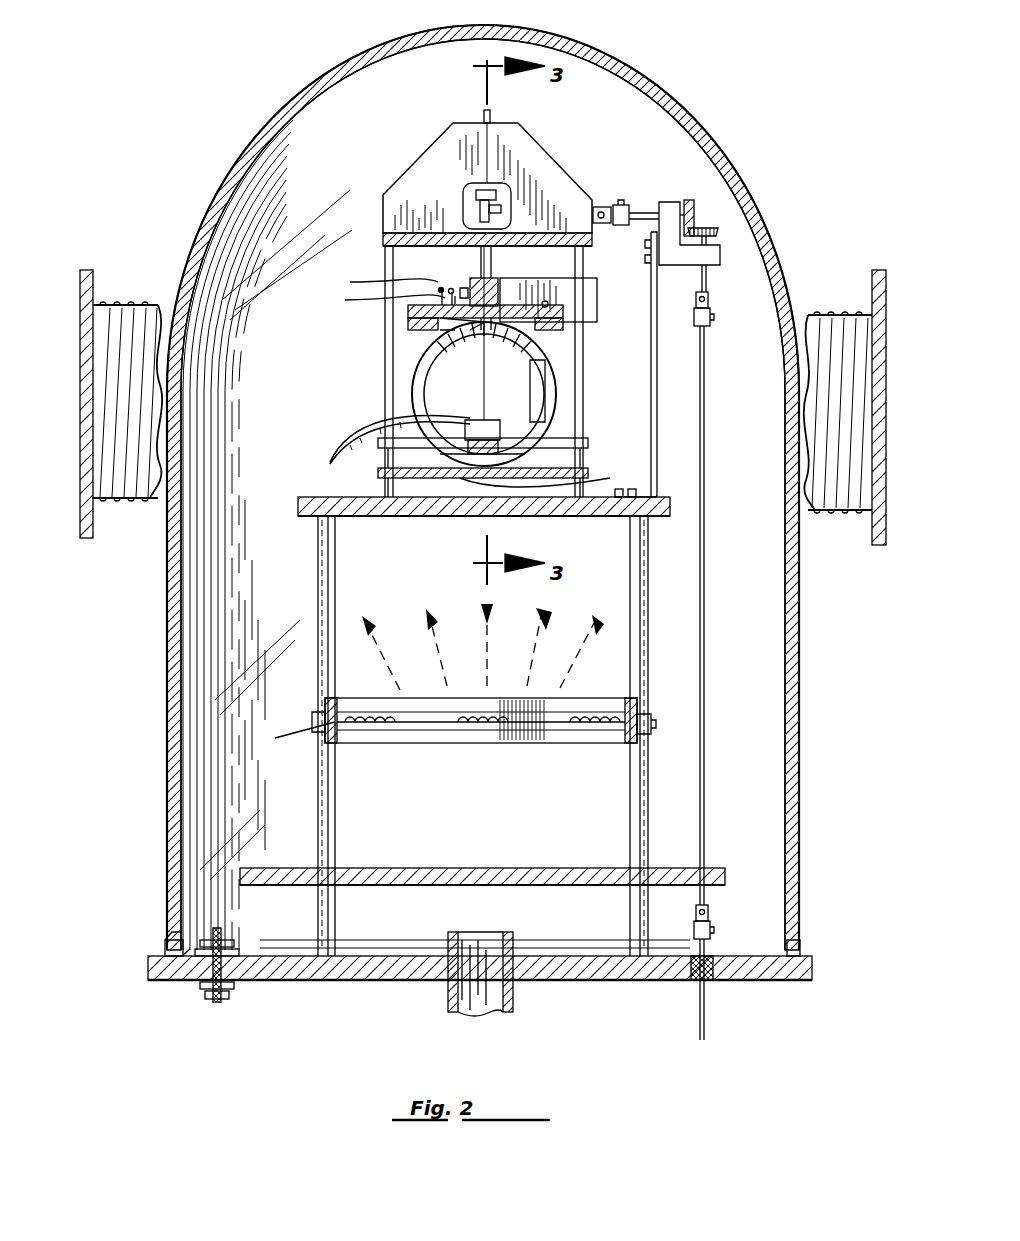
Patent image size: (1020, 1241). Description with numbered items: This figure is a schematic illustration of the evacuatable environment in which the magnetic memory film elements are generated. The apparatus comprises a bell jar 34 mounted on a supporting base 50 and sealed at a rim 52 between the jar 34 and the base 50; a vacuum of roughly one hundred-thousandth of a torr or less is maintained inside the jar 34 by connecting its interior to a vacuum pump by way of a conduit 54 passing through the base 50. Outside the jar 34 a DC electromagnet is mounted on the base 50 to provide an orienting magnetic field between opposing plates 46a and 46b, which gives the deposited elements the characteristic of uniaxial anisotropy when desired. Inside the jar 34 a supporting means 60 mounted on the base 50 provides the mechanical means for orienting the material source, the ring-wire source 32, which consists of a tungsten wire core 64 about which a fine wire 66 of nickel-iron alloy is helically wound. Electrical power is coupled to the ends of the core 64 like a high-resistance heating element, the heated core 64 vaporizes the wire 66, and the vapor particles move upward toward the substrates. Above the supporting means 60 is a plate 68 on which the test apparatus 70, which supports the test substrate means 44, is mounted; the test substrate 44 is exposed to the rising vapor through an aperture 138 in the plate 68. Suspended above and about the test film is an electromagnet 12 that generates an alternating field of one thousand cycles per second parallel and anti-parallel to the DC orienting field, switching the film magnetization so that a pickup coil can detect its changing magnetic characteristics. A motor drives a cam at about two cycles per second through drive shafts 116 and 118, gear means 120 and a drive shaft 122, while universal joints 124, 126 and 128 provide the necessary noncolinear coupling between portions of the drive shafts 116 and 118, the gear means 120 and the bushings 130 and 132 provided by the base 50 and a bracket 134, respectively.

The electromagnet 12 is at (556, 410).
The ring-wire source 32 is at (565, 745).
The bell jar 34 is at (321, 78).
The test substrate means 44 is at (530, 492).
The plate of DC electromagnet 46a is at (875, 548).
The plate of DC electromagnet 46b is at (90, 540).
The supporting base 50 is at (165, 985).
The rim 52 is at (195, 943).
The conduit 54 is at (512, 1012).
The supporting means 60 is at (318, 622).
The tungsten wire core 64 is at (402, 732).
The fine wire of nickel-iron alloy 66 is at (470, 732).
The plate 68 is at (316, 497).
The test apparatus 70 is at (362, 383).
The drive shaft 116 is at (704, 1035).
The drive shaft 118 is at (705, 770).
The gear means 120 is at (710, 270).
The drive shaft 122 is at (641, 215).
The universal joint 124 is at (712, 920).
The universal joint 126 is at (712, 318).
The universal joint 128 is at (605, 207).
The bushing 130 is at (706, 985).
The bushing 132 is at (505, 205).
The bracket 134 is at (433, 148).
The aperture 138 is at (483, 517).